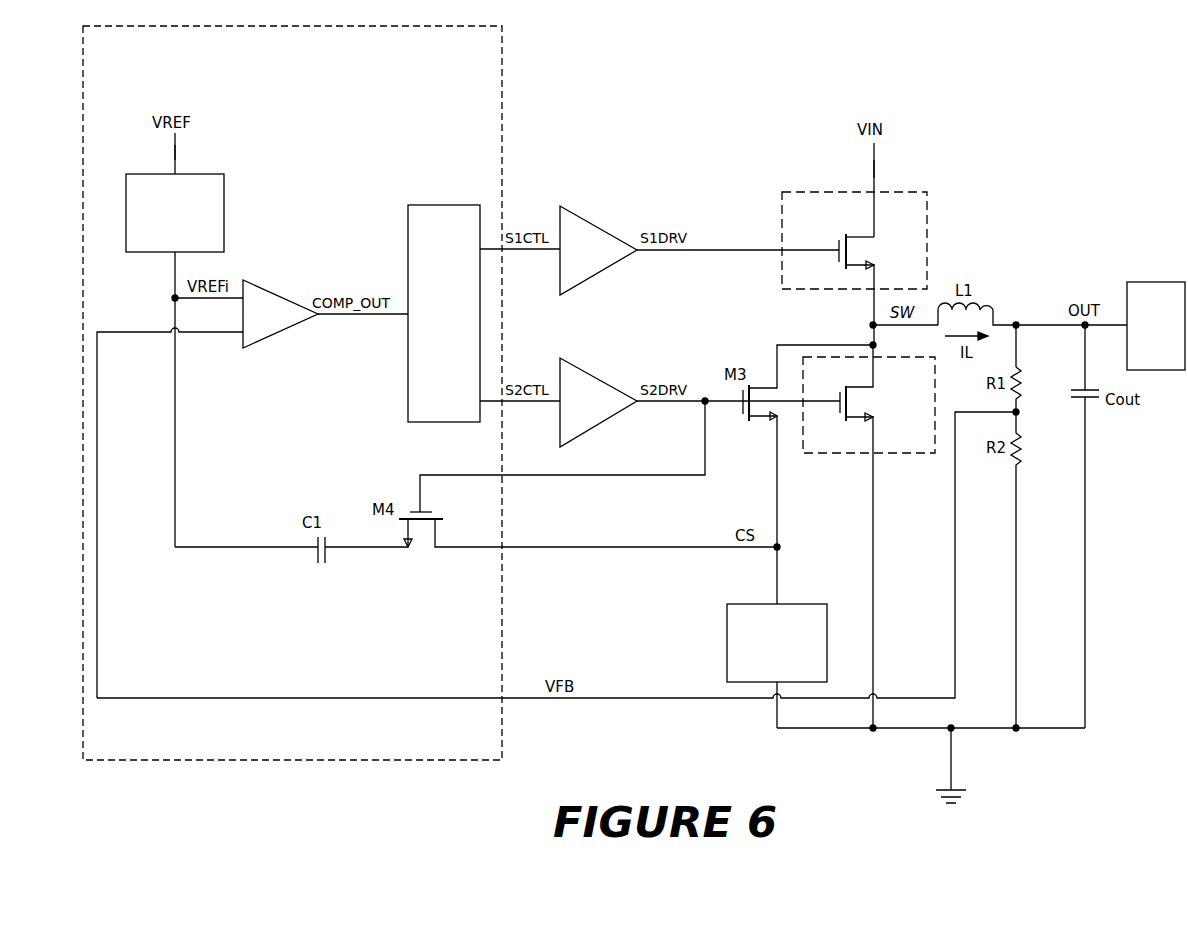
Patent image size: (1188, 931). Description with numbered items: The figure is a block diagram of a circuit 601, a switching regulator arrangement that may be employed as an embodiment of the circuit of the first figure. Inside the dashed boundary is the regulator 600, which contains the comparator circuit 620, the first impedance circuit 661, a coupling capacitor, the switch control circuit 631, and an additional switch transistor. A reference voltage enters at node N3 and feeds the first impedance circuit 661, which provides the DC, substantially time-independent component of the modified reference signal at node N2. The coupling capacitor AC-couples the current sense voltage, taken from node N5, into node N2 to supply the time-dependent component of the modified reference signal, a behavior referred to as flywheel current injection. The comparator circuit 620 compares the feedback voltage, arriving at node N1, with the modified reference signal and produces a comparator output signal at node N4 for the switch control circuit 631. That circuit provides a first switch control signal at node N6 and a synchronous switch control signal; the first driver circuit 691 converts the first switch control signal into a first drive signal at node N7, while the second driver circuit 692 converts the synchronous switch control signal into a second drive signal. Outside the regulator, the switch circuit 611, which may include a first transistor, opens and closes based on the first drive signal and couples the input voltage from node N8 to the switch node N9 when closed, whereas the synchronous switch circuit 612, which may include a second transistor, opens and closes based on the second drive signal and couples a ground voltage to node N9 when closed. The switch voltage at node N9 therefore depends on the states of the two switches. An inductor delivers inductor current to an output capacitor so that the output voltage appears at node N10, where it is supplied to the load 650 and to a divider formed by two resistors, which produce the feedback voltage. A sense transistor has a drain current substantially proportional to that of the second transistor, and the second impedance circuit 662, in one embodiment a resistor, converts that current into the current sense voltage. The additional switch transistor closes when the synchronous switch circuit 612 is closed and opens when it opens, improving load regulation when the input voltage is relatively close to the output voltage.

The regulator 600 is at (292, 393).
The circuit 601 is at (731, 172).
The switch circuit 611 is at (854, 268).
The synchronous switch circuit 612 is at (869, 536).
The comparator circuit 620 is at (280, 311).
The switch control circuit 631 is at (444, 313).
The load 650 is at (1156, 326).
The impedance circuit 661 is at (175, 213).
The impedance circuit 662 is at (777, 643).
The driver circuit 691 is at (598, 250).
The driver circuit 692 is at (598, 402).
The node N1 is at (140, 334).
The node N2 is at (171, 298).
The node N3 is at (175, 150).
The node N4 is at (352, 316).
The node N5 is at (702, 549).
The node N6 is at (527, 251).
The node N7 is at (707, 252).
The node N8 is at (872, 168).
The switch node N9 is at (869, 325).
The node N10 is at (1016, 322).